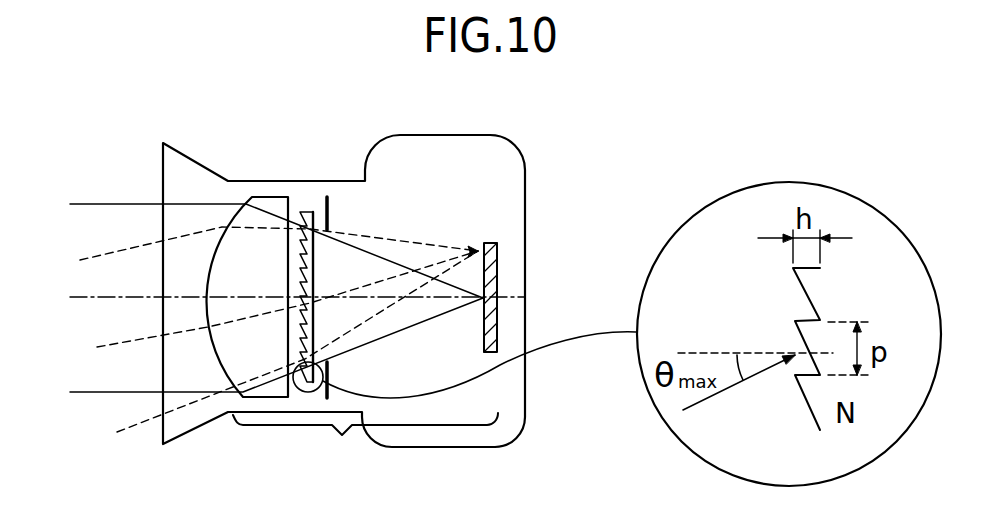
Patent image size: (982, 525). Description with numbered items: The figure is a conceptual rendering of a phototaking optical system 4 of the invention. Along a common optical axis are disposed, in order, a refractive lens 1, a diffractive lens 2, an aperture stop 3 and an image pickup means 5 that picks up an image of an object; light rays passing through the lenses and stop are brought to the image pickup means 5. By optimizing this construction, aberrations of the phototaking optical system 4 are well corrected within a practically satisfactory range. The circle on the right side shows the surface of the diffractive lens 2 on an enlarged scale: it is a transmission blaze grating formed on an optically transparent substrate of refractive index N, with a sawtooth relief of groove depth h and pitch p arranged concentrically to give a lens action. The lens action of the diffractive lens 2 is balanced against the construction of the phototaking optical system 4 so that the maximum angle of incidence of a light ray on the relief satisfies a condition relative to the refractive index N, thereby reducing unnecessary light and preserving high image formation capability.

The refractive lens 1 is at (262, 197).
The diffractive lens 2 is at (305, 211).
The aperture stop 3 is at (328, 197).
The phototaking optical system 4 is at (365, 448).
The image pickup means 5 is at (498, 255).